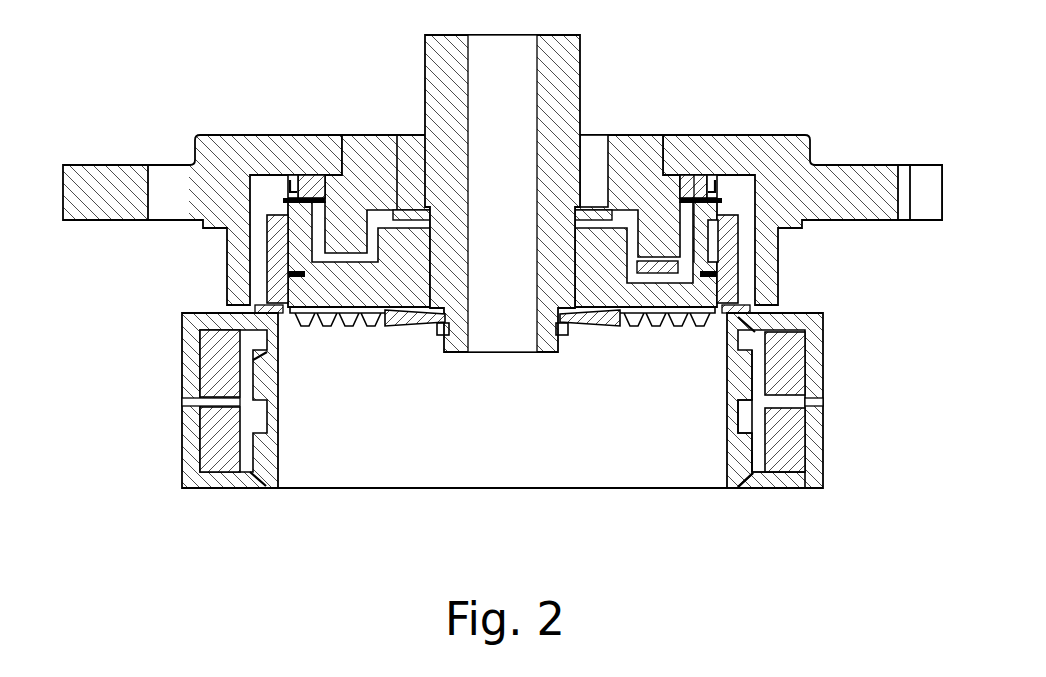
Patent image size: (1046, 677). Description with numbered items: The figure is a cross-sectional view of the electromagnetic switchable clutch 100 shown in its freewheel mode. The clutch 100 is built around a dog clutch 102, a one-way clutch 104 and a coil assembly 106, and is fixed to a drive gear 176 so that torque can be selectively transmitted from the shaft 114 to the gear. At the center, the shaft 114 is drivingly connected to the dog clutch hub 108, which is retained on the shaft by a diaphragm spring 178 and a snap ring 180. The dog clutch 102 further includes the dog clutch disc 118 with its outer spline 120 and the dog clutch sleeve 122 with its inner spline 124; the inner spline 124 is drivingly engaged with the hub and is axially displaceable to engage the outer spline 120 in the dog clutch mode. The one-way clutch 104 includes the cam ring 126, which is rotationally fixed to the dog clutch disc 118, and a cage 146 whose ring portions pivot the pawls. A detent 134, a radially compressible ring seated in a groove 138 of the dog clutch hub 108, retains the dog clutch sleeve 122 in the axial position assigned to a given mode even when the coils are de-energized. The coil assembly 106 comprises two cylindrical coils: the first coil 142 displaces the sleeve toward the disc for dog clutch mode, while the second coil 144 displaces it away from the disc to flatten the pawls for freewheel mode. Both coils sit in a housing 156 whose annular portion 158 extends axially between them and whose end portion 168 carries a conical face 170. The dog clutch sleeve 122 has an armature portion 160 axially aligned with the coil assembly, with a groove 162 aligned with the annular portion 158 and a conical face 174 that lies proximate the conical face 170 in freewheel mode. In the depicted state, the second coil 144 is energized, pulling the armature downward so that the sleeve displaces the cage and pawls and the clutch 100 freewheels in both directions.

The electromagnetic switchable clutch 100 is at (597, 108).
The dog clutch 102 is at (263, 208).
The one-way clutch 104 is at (738, 303).
The coil assembly 106 is at (275, 316).
The dog clutch hub 108 is at (373, 288).
The shaft 114 is at (440, 52).
The dog clutch disc 118 is at (308, 183).
The outer spline 120 is at (285, 178).
The dog clutch sleeve 122 is at (270, 314).
The inner spline 124 is at (212, 378).
The cam ring 126 is at (638, 143).
The detent 134 is at (280, 274).
The groove 138 is at (300, 283).
The coil 142 is at (176, 403).
The coil 144 is at (220, 432).
The cage 146 is at (692, 260).
The housing 156 is at (812, 445).
The annular portion 158 is at (808, 402).
The armature portion 160 is at (747, 445).
The groove 162 is at (746, 411).
The end portion 168 is at (803, 487).
The conical face 170 is at (746, 486).
The conical face 174 is at (756, 518).
The drive gear 176 is at (748, 143).
The diaphragm spring 178 is at (625, 320).
The snap ring 180 is at (570, 328).